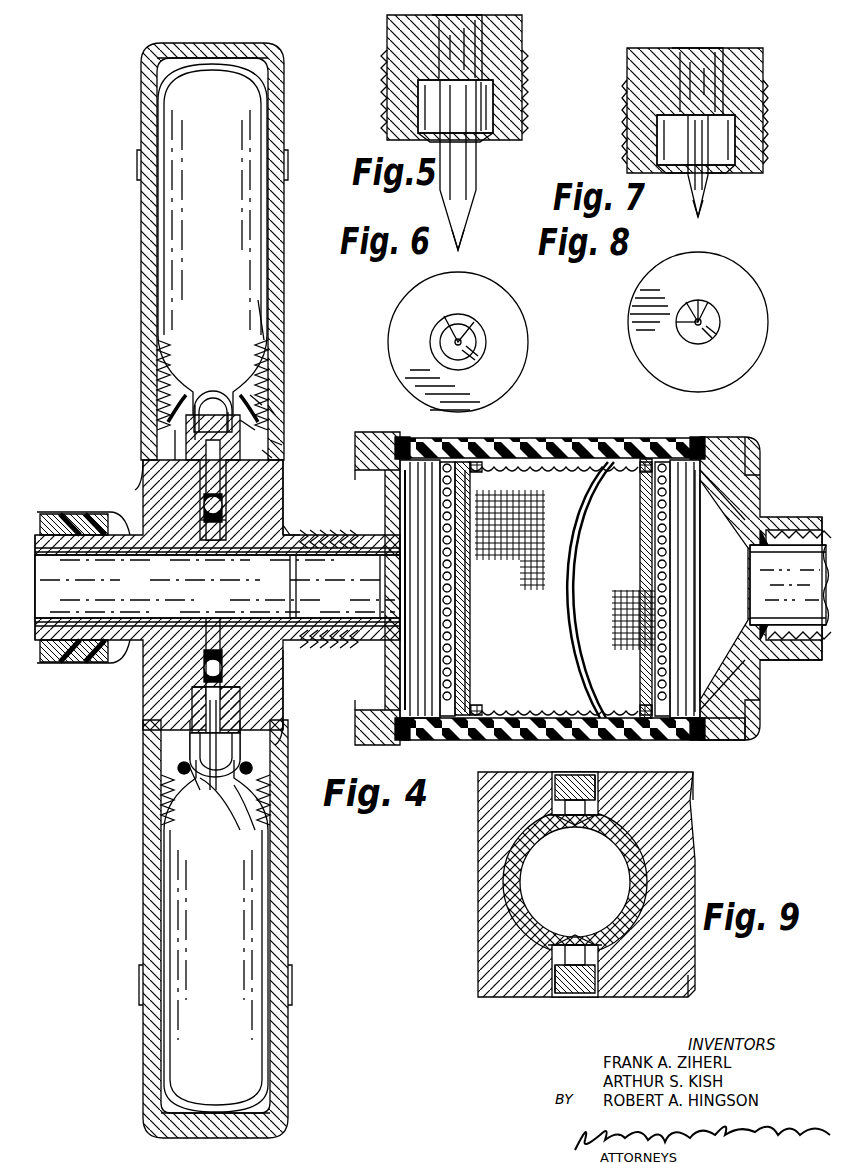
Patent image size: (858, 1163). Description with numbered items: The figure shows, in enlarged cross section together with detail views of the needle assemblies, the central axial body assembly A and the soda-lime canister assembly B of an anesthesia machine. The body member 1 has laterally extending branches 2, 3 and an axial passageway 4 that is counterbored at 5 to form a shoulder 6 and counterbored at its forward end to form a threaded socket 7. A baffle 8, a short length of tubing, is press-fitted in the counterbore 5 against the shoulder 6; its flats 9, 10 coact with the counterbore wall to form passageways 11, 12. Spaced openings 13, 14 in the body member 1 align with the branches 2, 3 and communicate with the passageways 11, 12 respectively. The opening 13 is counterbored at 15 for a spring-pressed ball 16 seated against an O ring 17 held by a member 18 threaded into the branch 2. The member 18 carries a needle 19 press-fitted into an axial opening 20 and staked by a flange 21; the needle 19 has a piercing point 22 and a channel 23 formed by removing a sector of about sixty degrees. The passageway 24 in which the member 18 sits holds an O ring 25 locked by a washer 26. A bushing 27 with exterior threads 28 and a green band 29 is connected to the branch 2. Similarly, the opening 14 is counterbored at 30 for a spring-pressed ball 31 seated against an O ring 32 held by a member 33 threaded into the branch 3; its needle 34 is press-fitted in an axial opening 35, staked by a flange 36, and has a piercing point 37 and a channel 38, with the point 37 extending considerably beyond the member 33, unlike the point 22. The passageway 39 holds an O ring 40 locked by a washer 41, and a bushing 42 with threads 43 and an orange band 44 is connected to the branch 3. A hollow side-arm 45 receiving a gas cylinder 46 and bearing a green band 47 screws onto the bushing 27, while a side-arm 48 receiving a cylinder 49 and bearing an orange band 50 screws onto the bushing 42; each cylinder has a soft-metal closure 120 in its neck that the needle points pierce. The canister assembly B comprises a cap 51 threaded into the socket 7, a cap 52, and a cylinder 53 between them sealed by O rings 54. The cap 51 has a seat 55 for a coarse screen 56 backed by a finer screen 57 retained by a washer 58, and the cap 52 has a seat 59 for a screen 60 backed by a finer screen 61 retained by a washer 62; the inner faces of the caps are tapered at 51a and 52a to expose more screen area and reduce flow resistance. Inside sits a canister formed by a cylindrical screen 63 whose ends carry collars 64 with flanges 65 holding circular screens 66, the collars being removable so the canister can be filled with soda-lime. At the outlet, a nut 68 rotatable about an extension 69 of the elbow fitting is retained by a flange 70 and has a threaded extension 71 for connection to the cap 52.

In FIG. 4, the central body member 1 is at (72, 660).
In FIG. 9, the central body member 1 is at (478, 858).
In FIG. 4, the branch 2 is at (283, 694).
In FIG. 9, the branch 2 is at (688, 995).
In FIG. 4, the branch 3 is at (260, 505).
In FIG. 9, the branch 3 is at (693, 780).
In FIG. 4, the axial passageway 4 is at (300, 540).
In FIG. 4, the counterbore 5 is at (130, 550).
In FIG. 9, the counterbore 5 is at (645, 864).
In FIG. 4, the shoulder 6 is at (272, 525).
In FIG. 4, the threaded socket 7 is at (325, 530).
In FIG. 4, the baffle 8 is at (110, 640).
In FIG. 9, the baffle 8 is at (640, 888).
In FIG. 4, the flat 9 is at (200, 512).
In FIG. 9, the flat 9 is at (560, 945).
In FIG. 4, the flat 10 is at (48, 540).
In FIG. 9, the flat 10 is at (600, 815).
In FIG. 9, the passageway 11 is at (592, 948).
In FIG. 4, the passageway 12 is at (112, 548).
In FIG. 9, the passageway 12 is at (560, 812).
In FIG. 9, the opening 13 is at (565, 960).
In FIG. 9, the opening 14 is at (595, 790).
In FIG. 4, the counterbore 15 is at (222, 665).
In FIG. 9, the counterbore 15 is at (582, 965).
In FIG. 4, the spring-pressed ball 16 is at (205, 675).
In FIG. 4, the O ring 17 is at (200, 700).
In FIG. 4, the member 18 is at (242, 706).
In FIG. 7, the member 18 is at (765, 112).
In FIG. 8, the member 18 is at (768, 300).
In FIG. 4, the needle 19 is at (195, 740).
In FIG. 7, the needle 19 is at (723, 140).
In FIG. 8, the needle 19 is at (690, 338).
In FIG. 7, the axial opening 20 is at (725, 172).
In FIG. 7, the flange 21 is at (668, 172).
In FIG. 4, the piercing point 22 is at (212, 760).
In FIG. 7, the piercing point 22 is at (698, 217).
In FIG. 8, the piercing point 22 is at (720, 328).
In FIG. 4, the channel or passageway 23 is at (245, 718).
In FIG. 7, the channel or passageway 23 is at (690, 133).
In FIG. 8, the channel or passageway 23 is at (700, 318).
In FIG. 4, the passageway 24 is at (240, 752).
In FIG. 4, the O ring 25 is at (205, 760).
In FIG. 4, the washer 26 is at (262, 795).
In FIG. 4, the bushing 27 is at (190, 765).
In FIG. 4, the exterior threads 28 is at (195, 775).
In FIG. 4, the band 29 is at (283, 720).
In FIG. 9, the counterbore 30 is at (578, 772).
In FIG. 4, the spring-pressed ball 31 is at (222, 500).
In FIG. 4, the O ring 32 is at (205, 520).
In FIG. 4, the member 33 is at (185, 440).
In FIG. 5, the member 33 is at (522, 86).
In FIG. 4, the needle 34 is at (195, 410).
In FIG. 5, the needle 34 is at (485, 112).
In FIG. 6, the needle 34 is at (488, 338).
In FIG. 5, the axial opening 35 is at (493, 128).
In FIG. 5, the flange 36 is at (485, 140).
In FIG. 4, the piercing point 37 is at (264, 322).
In FIG. 5, the piercing point 37 is at (460, 250).
In FIG. 6, the piercing point 37 is at (470, 352).
In FIG. 4, the channel or passageway 38 is at (232, 420).
In FIG. 5, the channel or passageway 38 is at (440, 108).
In FIG. 6, the channel or passageway 38 is at (448, 340).
In FIG. 4, the passageway 39 is at (255, 425).
In FIG. 4, the O ring 40 is at (265, 400).
In FIG. 4, the washer 41 is at (270, 380).
In FIG. 4, the bushing 42 is at (280, 440).
In FIG. 4, the exterior threads 43 is at (275, 410).
In FIG. 4, the band 44 is at (270, 455).
In FIG. 4, the side-arm 45 is at (288, 934).
In FIG. 4, the cylinder 46 is at (245, 898).
In FIG. 4, the band 47 is at (288, 1040).
In FIG. 4, the side-arm 48 is at (280, 250).
In FIG. 4, the cylinder 49 is at (240, 178).
In FIG. 4, the band 50 is at (283, 135).
In FIG. 4, the cap 51 is at (370, 438).
In FIG. 4, the tapered inner face 51a is at (400, 628).
In FIG. 4, the cap 52 is at (740, 438).
In FIG. 4, the tapered inner face 52a is at (630, 530).
In FIG. 4, the cylinder 53 is at (640, 440).
In FIG. 4, the O rings 54 is at (398, 438).
In FIG. 4, the annular ledge or seat 55 is at (385, 490).
In FIG. 4, the screen 56 is at (375, 590).
In FIG. 4, the screen 57 is at (400, 588).
In FIG. 4, the washer 58 is at (455, 462).
In FIG. 4, the annular ledge or seat 59 is at (720, 498).
In FIG. 4, the screen 60 is at (720, 690).
In FIG. 4, the screen 61 is at (715, 722).
In FIG. 4, the washer 62 is at (690, 462).
In FIG. 4, the cylindrical screen 63 is at (545, 462).
In FIG. 4, the collars 64 is at (482, 462).
In FIG. 4, the flanges 65 is at (445, 668).
In FIG. 4, the circular screens 66 is at (470, 580).
In FIG. 4, the nut 68 is at (812, 510).
In FIG. 4, the extension 69 is at (792, 660).
In FIG. 4, the flange 70 is at (790, 535).
In FIG. 4, the threaded extension 71 is at (820, 660).
In FIG. 4, the closure or stopper 120 is at (222, 395).
In FIG. 4, the central axial body assembly A is at (120, 485).
In FIG. 4, the soda-lime canister assembly B is at (548, 432).